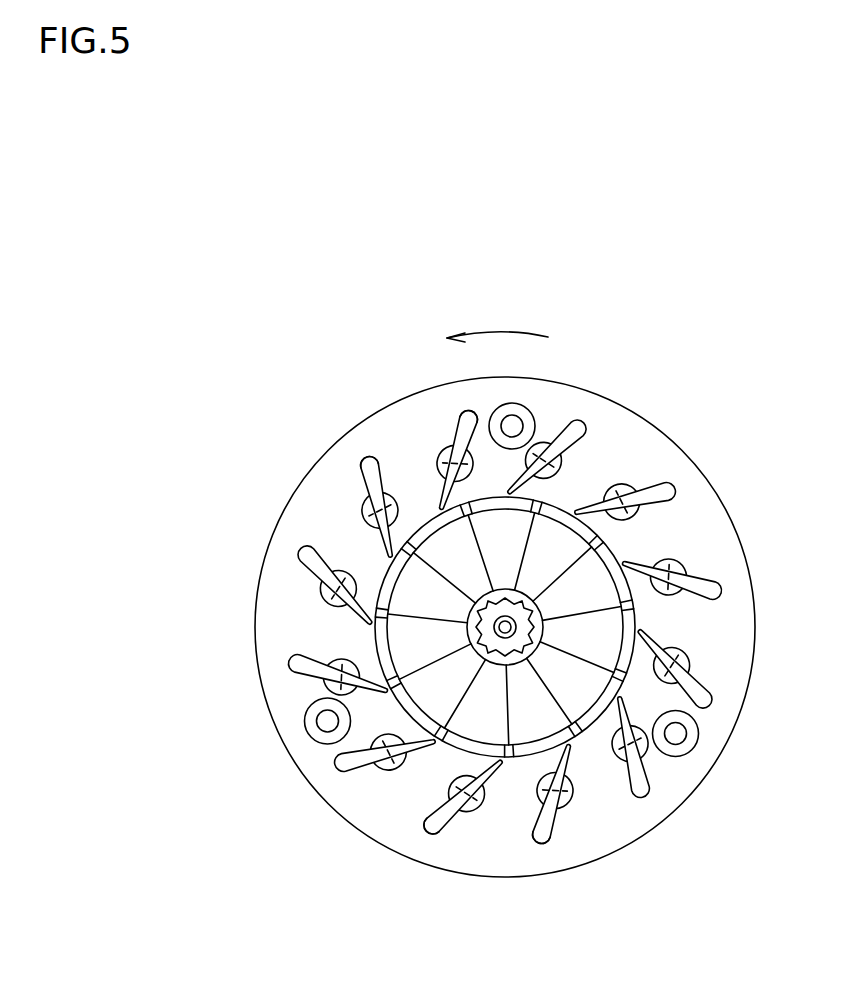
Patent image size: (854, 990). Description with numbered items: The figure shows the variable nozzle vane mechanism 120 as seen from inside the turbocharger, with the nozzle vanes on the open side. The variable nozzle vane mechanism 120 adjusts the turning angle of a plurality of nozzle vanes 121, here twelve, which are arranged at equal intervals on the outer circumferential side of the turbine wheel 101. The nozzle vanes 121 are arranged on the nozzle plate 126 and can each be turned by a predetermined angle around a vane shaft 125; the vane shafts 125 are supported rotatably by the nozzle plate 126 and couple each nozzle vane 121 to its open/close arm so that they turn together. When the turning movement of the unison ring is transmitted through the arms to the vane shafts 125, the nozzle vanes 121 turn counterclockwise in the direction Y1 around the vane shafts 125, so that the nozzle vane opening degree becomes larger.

The variable nozzle vane mechanism 120 is at (308, 312).
The nozzle vane 121 is at (293, 663).
The vane shaft 125 is at (458, 428).
The nozzle plate 126 is at (648, 428).
The turbine wheel 101 is at (470, 720).
The direction of arrow Y1 is at (503, 333).